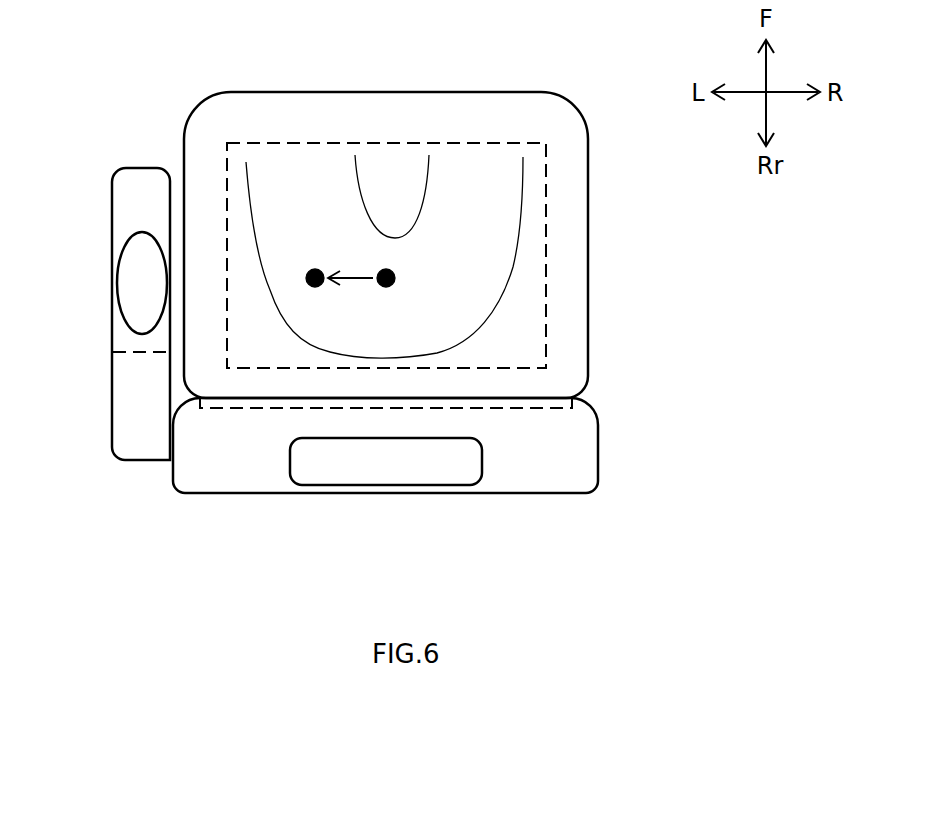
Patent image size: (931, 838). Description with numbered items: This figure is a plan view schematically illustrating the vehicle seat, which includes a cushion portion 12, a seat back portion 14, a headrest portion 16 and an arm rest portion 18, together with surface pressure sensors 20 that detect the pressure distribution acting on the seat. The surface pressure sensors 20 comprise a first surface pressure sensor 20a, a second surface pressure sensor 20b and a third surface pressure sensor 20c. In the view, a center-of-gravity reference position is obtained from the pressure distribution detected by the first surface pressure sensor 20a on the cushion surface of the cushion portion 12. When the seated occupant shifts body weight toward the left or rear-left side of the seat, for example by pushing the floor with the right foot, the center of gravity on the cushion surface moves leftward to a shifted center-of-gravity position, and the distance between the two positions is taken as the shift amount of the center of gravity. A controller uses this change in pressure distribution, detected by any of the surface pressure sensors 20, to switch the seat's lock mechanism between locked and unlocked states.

The cushion portion 12 is at (588, 335).
The seat back portion 14 is at (598, 450).
The headrest portion 16 is at (450, 473).
The arm rest portion 18 is at (113, 227).
The surface pressure sensors 20 is at (608, 263).
The first surface pressure sensor 20a is at (550, 178).
The second surface pressure sensor 20b is at (243, 410).
The third surface pressure sensor 20c is at (137, 357).